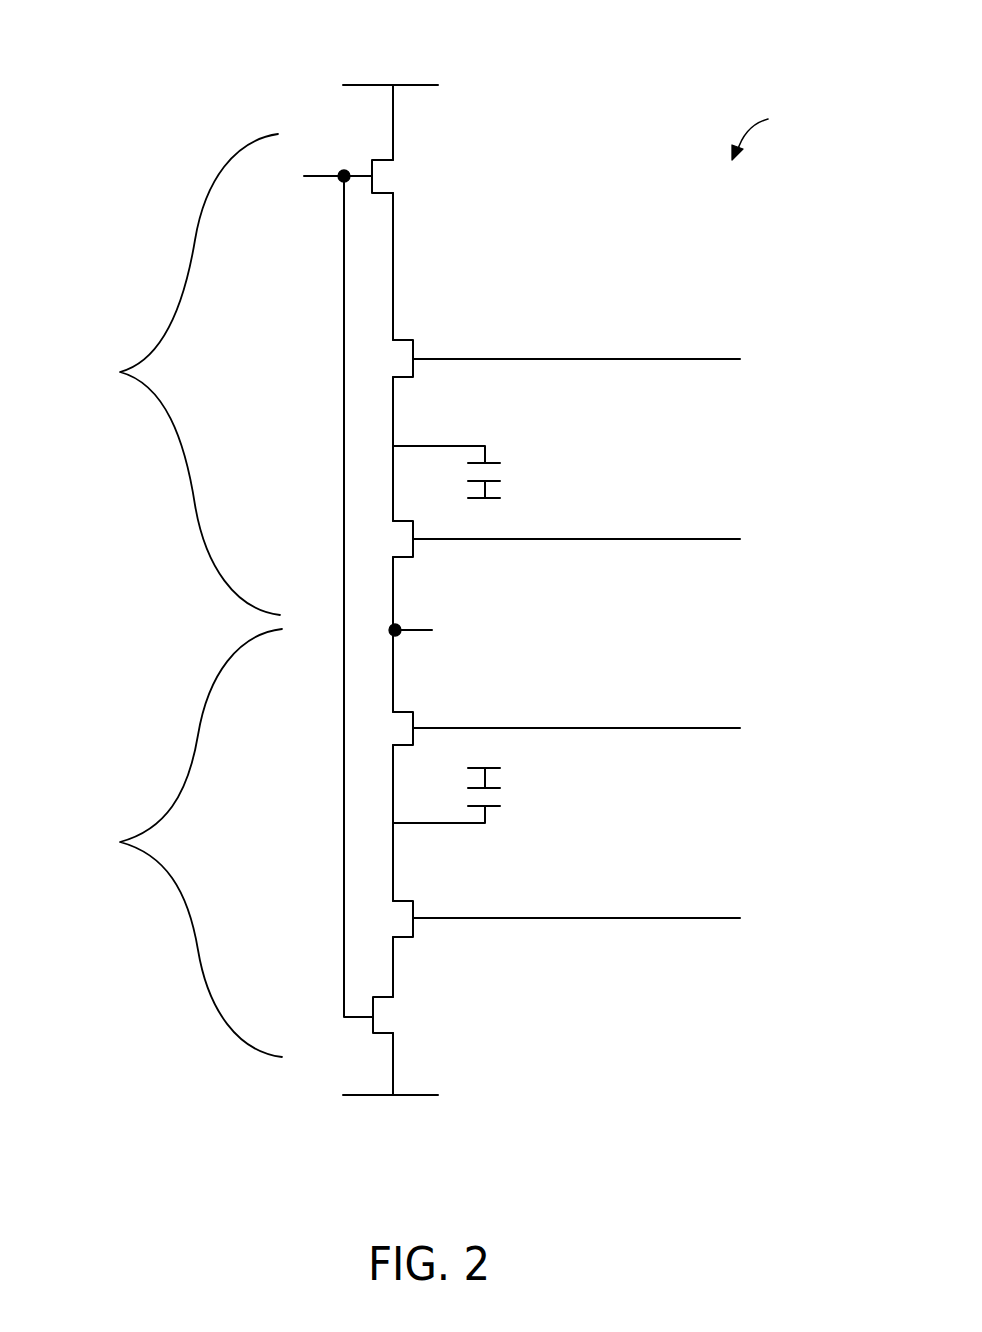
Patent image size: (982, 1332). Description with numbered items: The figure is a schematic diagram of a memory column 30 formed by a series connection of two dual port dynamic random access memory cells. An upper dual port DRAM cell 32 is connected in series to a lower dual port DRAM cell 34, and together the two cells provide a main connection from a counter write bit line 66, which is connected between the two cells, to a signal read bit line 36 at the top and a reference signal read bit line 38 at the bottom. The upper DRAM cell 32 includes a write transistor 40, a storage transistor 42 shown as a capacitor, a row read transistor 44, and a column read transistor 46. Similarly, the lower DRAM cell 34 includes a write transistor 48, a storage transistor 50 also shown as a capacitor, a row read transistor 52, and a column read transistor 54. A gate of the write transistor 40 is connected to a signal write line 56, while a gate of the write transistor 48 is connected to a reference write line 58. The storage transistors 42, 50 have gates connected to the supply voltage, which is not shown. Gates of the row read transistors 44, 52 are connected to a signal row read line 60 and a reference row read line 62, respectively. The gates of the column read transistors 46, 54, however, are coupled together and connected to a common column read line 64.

The memory column 30 is at (769, 129).
The upper dual port DRAM cell 32 is at (176, 374).
The lower dual port DRAM cell 34 is at (177, 843).
The signal read bit line 36 is at (418, 85).
The reference signal read bit line 38 is at (415, 1095).
The write transistor 40 is at (415, 532).
The storage transistor 42 is at (487, 463).
The row read transistor 44 is at (415, 347).
The column read transistor 46 is at (385, 160).
The write transistor 48 is at (415, 717).
The storage transistor 50 is at (489, 804).
The row read transistor 52 is at (415, 907).
The column read transistor 54 is at (385, 997).
The signal write line 56 is at (695, 539).
The reference write line 58 is at (695, 728).
The signal row read line 60 is at (695, 359).
The reference row read line 62 is at (695, 918).
The column read line 64 is at (338, 178).
The counter write bit line 66 is at (412, 627).